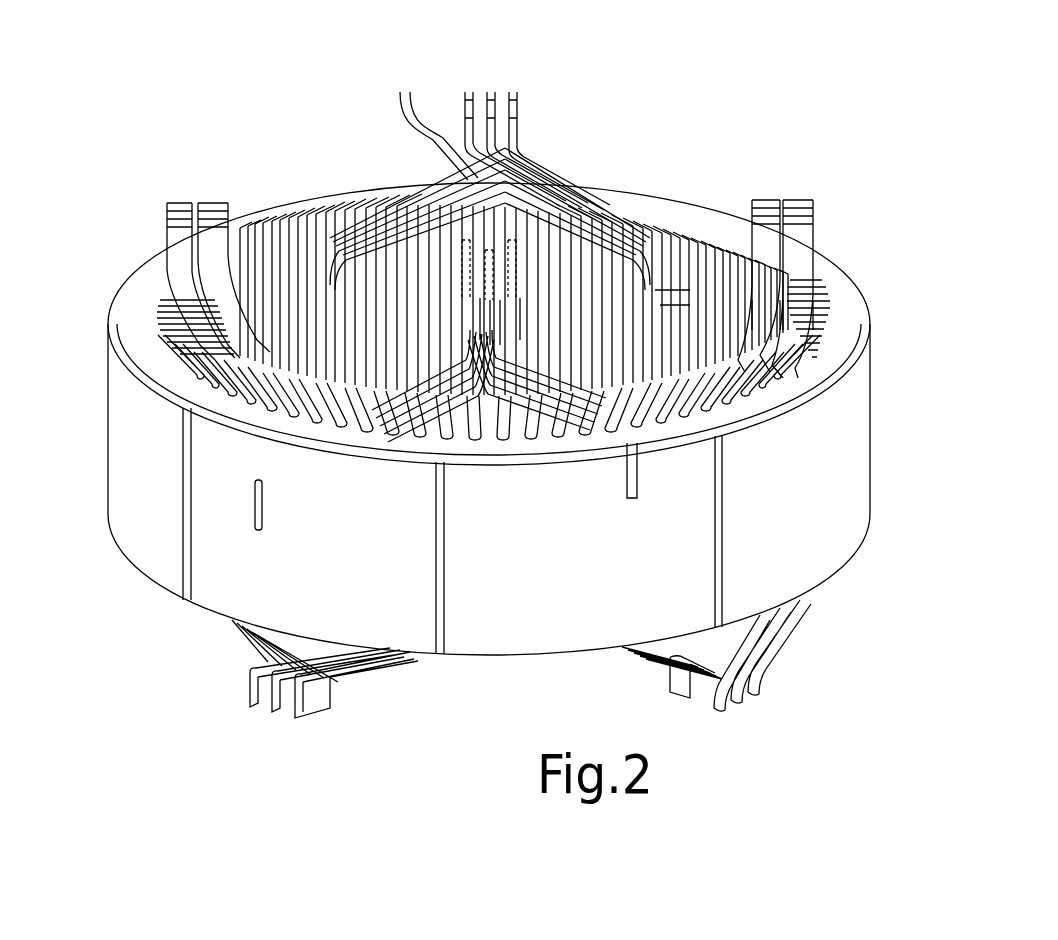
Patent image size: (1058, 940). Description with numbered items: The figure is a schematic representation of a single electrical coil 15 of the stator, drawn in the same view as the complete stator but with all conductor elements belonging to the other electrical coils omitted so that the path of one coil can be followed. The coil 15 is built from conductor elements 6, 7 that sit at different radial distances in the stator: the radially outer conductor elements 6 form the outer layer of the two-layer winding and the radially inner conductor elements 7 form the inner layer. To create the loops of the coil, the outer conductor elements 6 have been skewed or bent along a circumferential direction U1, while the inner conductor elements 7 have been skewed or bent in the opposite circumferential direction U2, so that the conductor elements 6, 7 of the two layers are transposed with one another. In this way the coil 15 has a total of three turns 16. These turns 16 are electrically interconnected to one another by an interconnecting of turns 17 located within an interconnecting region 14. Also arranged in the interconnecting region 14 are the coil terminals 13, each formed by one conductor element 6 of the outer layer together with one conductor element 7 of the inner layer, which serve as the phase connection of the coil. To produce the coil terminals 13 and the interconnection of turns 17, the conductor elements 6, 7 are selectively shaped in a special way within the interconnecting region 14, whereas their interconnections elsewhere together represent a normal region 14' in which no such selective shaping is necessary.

The conductor element 6 is at (803, 172).
The conductor element 7 is at (762, 172).
The coil terminal 13 is at (533, 250).
The interconnecting region 14 is at (508, 278).
The normal region 14' is at (486, 189).
The electrical coil 15 is at (372, 205).
The turn 16 is at (430, 120).
The interconnecting of turns 17 is at (495, 328).
The circumferential direction U1 is at (807, 377).
The circumferential direction U2 is at (683, 317).